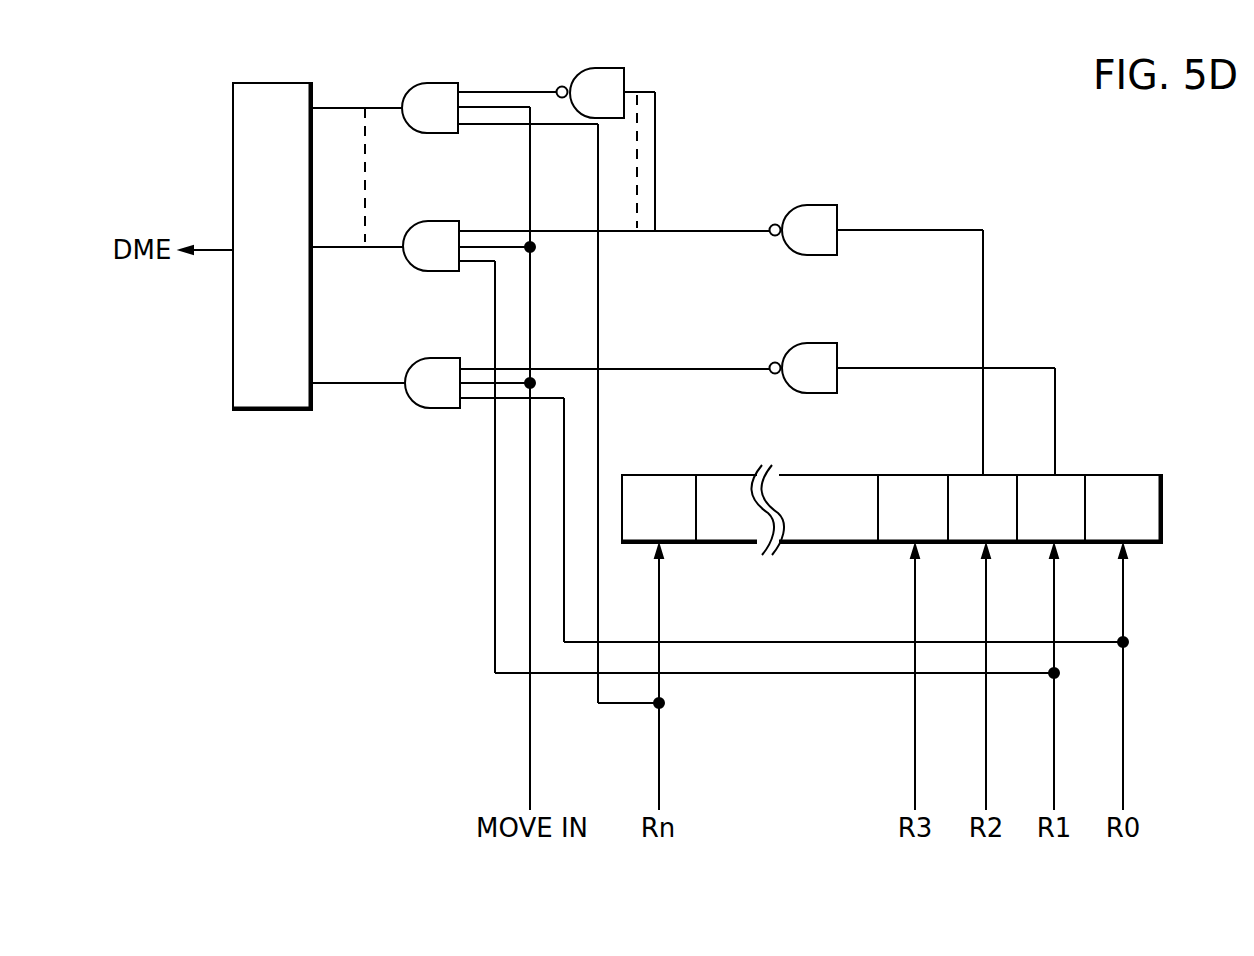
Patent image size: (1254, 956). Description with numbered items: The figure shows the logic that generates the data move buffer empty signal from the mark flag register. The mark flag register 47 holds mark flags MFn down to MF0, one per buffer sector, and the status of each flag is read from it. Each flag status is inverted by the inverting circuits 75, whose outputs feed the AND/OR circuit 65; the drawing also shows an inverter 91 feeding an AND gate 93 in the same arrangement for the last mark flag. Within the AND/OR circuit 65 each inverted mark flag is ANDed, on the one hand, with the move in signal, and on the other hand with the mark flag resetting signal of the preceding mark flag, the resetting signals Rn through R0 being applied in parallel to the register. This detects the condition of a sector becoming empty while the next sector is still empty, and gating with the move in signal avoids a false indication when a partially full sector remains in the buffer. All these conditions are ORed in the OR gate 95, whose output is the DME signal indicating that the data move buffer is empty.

The OR gate 95 is at (297, 83).
The AND gate 93 is at (444, 82).
The inverter 91 is at (610, 66).
The inverting circuits 75 is at (814, 246).
The AND/OR circuit 65 is at (411, 373).
The mark flag register 47 is at (713, 474).